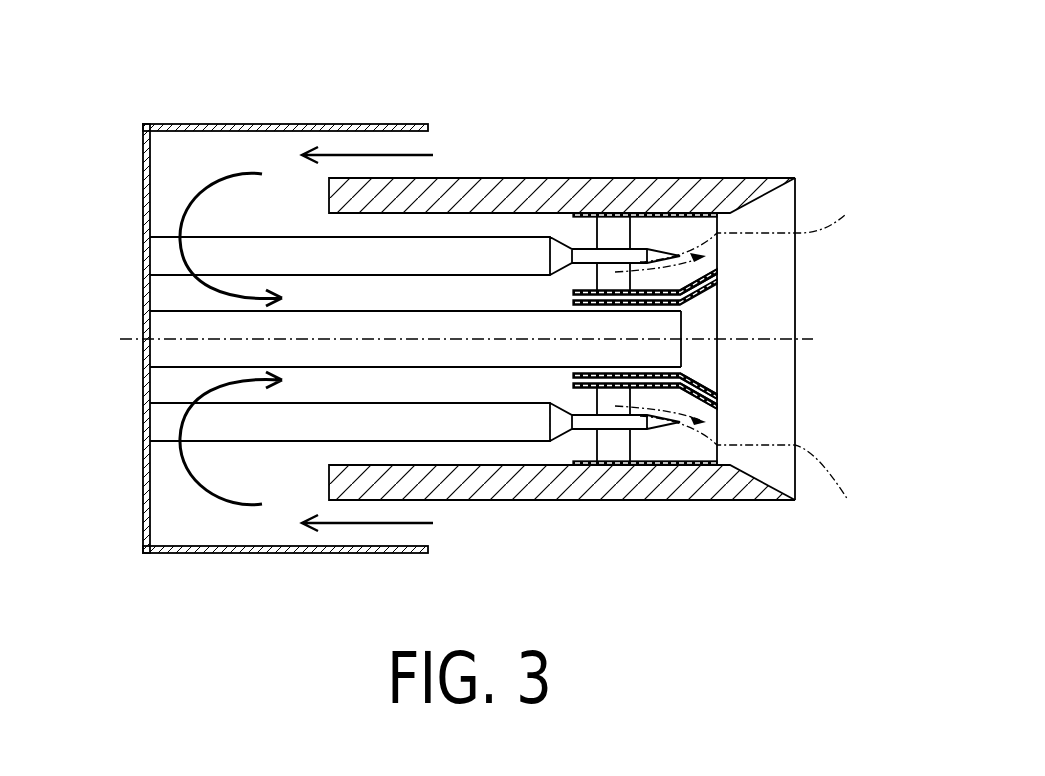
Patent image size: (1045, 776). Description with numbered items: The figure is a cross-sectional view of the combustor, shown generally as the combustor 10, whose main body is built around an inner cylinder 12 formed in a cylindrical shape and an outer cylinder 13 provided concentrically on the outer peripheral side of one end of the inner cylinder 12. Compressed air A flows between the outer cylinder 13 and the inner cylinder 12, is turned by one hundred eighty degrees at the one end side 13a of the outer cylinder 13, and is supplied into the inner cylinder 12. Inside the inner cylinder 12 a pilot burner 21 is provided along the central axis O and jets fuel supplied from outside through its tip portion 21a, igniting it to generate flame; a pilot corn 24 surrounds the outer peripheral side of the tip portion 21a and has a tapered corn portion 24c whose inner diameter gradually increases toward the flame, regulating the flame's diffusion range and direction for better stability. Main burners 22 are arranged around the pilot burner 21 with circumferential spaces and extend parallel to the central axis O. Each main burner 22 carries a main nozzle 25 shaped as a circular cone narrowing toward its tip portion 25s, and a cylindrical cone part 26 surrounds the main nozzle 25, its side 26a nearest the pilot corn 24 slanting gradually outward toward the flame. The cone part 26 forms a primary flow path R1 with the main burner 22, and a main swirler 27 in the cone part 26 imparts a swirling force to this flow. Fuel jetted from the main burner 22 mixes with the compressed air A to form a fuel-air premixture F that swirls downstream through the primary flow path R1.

The burner 10 is at (752, 254).
The inner cylinder 12 is at (550, 178).
The outer cylinder 13 is at (325, 124).
The one end side of the outer cylinder 13a is at (143, 265).
The pilot burner 21 is at (163, 367).
The tip portion 21a is at (683, 342).
The main burner 22 is at (495, 236).
The pilot corn 24 is at (718, 300).
The tapered corn portion 24c is at (718, 393).
The main nozzle 25 is at (636, 250).
The tip portion 25s is at (705, 213).
The cone part 26 is at (718, 232).
The side proximate to the pilot corn 26a is at (718, 263).
The main swirler 27 is at (629, 240).
The compressed air A is at (213, 182).
The fuel-air premixture F is at (742, 364).
The central axis O is at (129, 338).
The primary flow path R1 is at (590, 230).